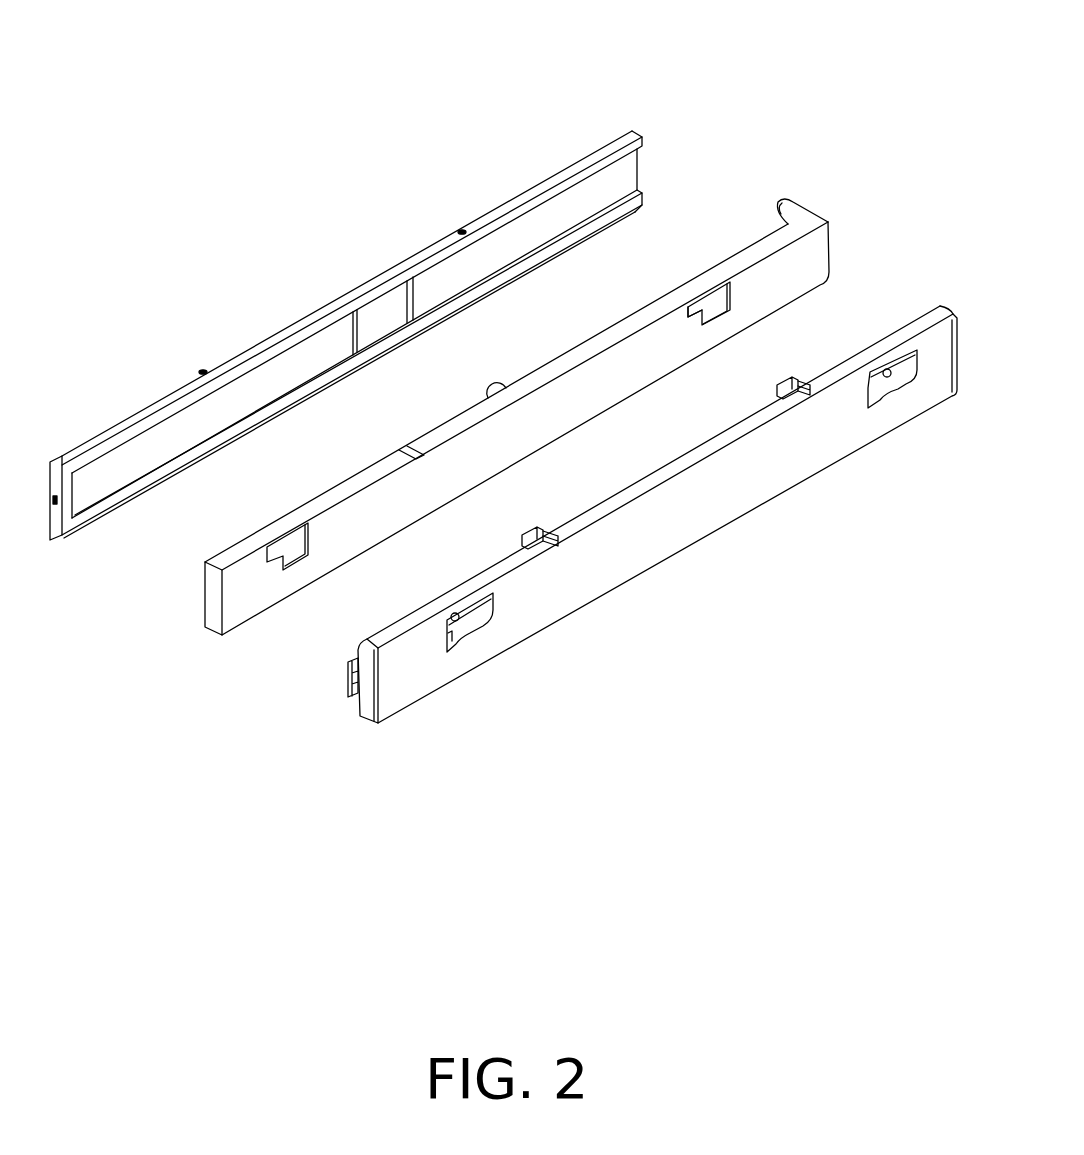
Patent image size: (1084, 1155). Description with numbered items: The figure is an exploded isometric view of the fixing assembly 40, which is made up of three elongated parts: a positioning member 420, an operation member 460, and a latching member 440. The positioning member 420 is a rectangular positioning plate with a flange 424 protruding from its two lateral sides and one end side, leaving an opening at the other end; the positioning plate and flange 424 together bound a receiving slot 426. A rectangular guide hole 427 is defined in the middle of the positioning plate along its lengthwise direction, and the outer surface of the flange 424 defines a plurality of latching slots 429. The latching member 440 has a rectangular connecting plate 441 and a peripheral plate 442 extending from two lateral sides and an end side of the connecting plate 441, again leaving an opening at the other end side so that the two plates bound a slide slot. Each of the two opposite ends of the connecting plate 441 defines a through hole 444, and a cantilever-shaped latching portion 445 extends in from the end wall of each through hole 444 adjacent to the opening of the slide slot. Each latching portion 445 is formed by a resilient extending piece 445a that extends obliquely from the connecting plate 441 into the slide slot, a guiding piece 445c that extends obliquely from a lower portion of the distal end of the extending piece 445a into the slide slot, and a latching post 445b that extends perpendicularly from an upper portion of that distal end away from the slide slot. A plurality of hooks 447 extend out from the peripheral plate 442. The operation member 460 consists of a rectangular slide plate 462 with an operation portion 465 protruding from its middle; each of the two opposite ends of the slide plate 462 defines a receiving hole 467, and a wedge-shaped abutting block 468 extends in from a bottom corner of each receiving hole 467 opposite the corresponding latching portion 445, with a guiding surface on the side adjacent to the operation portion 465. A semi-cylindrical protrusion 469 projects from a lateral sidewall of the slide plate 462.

The fixing assembly 40 is at (400, 67).
The positioning member 420 is at (673, 108).
The flange 424 is at (553, 180).
The receiving slot 426 is at (631, 178).
The guide hole 427 is at (383, 310).
The latching slots 429 is at (460, 230).
The operation member 460 is at (820, 185).
The slide plate 462 is at (230, 556).
The operation portion 465 is at (488, 393).
The receiving hole 467 is at (718, 297).
The abutting block 468 is at (692, 313).
The semi-cylindrical protrusion 469 is at (400, 449).
The latching member 440 is at (912, 300).
The connecting plate 441 is at (685, 527).
The peripheral plate 442 is at (358, 637).
The through hole 444 is at (875, 400).
The latching portion 445 is at (638, 700).
The extending piece 445a is at (485, 606).
The latching post 445b is at (463, 617).
The guiding piece 445c is at (453, 638).
The hooks 447 is at (525, 530).